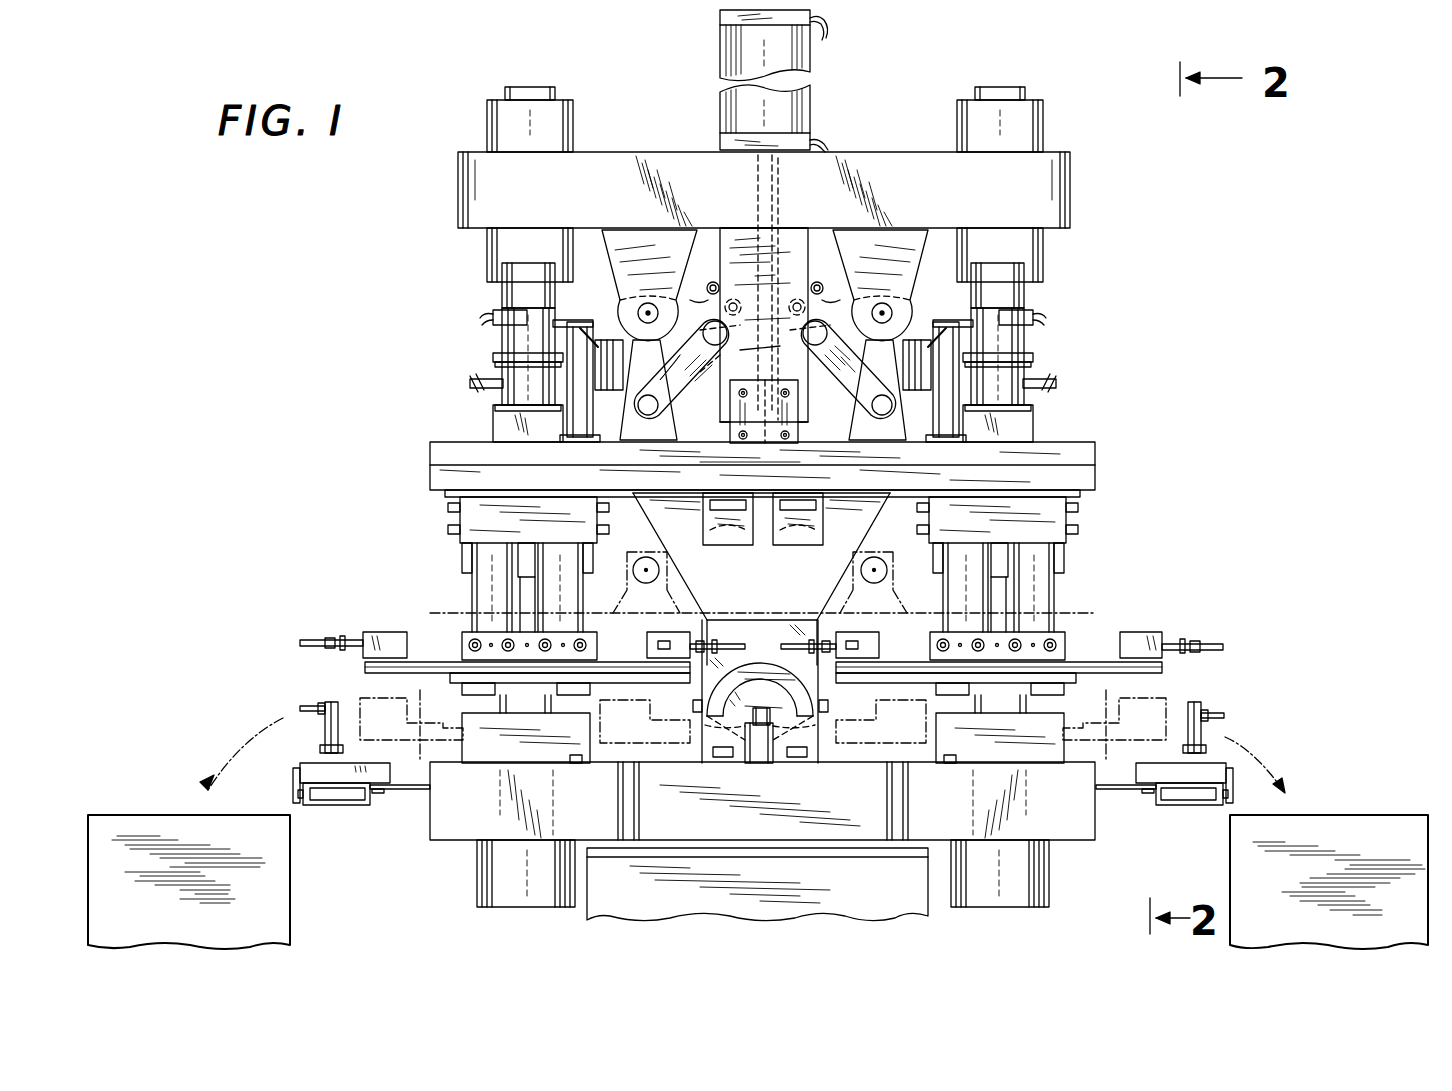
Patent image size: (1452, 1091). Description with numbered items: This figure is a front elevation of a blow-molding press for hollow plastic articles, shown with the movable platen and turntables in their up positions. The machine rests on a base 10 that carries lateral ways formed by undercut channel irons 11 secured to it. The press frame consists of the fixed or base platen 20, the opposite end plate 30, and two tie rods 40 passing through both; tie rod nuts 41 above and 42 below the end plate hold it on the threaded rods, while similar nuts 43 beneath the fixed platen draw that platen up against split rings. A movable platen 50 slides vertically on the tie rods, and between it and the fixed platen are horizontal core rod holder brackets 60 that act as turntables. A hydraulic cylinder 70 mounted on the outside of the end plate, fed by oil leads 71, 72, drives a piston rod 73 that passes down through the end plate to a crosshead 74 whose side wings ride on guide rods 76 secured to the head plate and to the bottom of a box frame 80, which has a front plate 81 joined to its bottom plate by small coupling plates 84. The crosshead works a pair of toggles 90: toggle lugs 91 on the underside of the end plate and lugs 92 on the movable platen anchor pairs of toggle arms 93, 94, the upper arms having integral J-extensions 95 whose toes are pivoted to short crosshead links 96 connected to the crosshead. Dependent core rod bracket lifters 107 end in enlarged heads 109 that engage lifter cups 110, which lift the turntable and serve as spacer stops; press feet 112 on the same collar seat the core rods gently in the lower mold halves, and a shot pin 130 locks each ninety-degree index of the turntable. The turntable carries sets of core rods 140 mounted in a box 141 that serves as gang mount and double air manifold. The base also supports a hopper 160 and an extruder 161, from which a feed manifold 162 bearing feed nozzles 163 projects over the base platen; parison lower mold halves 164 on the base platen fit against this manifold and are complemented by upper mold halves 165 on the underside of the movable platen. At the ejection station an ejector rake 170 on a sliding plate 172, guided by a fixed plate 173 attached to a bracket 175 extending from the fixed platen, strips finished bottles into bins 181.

The base 10 is at (600, 910).
The undercut channel irons 11 is at (786, 850).
The fixed platen 20 is at (450, 830).
The end plate 30 is at (460, 210).
The tie rods 40 is at (1030, 346).
The tie rod nuts 41 is at (490, 128).
The tie rod nuts 42 is at (490, 262).
The nuts 43 is at (478, 892).
The movable platen 50 is at (432, 482).
The core rod holder brackets 60 is at (366, 672).
The hydraulic cylinder 70 is at (722, 58).
The oil lead 71 is at (828, 38).
The oil lead 72 is at (822, 142).
The piston rod 73 is at (758, 182).
The crosshead 74 is at (800, 296).
The guide rods 76 is at (712, 385).
The box frame 80 is at (712, 258).
The front plate 81 is at (790, 234).
The coupling plates 84 is at (798, 418).
The toggles 90 is at (672, 365).
The toggle lugs 91 is at (612, 262).
The toggle lugs 92 is at (628, 418).
The upper toggle arms 93 is at (676, 298).
The toggle arms 94 is at (694, 378).
The J-extensions 95 is at (766, 344).
The crosshead links 96 is at (706, 284).
The core rod bracket lifters 107 is at (576, 592).
The enlarged head 109 is at (1064, 708).
The lifter cup 110 is at (1066, 686).
The press feet 112 is at (528, 548).
The shot pin 130 is at (966, 322).
The core rods 140 is at (315, 640).
The box 141 is at (392, 634).
The hopper 160 is at (764, 602).
The extruder 161 is at (760, 689).
The feed manifold 162 is at (774, 740).
The feed nozzles 163 is at (757, 728).
The parison lower mold halves 164 is at (806, 714).
The upper mold halves 165 is at (708, 538).
The ejector rake 170 is at (324, 742).
The sliding plate 172 is at (382, 764).
The fixed plate 173 is at (388, 774).
The bracket 175 is at (405, 790).
The bins 181 is at (272, 899).